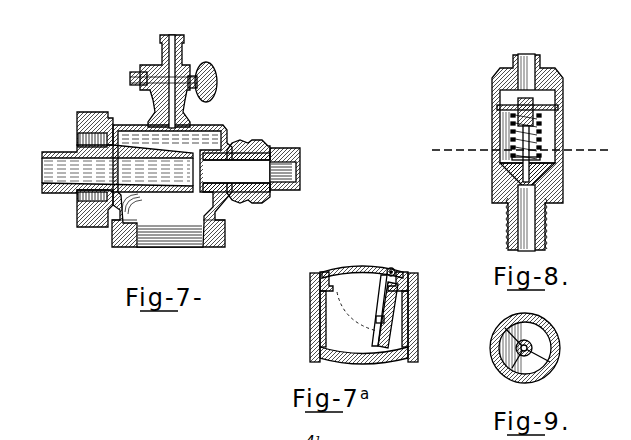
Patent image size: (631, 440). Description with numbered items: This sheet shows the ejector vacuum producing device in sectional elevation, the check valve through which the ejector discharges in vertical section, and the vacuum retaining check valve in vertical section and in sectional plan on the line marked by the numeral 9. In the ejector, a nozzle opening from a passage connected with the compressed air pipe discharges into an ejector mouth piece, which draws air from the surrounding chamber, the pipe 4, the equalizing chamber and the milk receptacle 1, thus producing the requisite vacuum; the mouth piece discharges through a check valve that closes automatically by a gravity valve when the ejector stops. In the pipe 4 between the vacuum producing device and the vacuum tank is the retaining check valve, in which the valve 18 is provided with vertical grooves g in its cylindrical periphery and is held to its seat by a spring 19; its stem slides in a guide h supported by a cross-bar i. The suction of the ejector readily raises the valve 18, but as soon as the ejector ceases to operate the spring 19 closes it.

In FIG. 7, the milk receptacle 1 is at (241, 152).
In FIG. 7, the pipe 4 is at (188, 245).
In FIG. 8, the cross-bar i is at (496, 106).
In FIG. 8, the guide h is at (516, 120).
In FIG. 9, the guide h is at (556, 362).
In FIG. 8, the spring 19 is at (538, 133).
In FIG. 8, the vertical grooves g is at (502, 157).
In FIG. 9, the vertical grooves g is at (548, 323).
In FIG. 8, the valve 18 is at (557, 173).
In FIG. 9, the valve 18 is at (503, 332).
In FIG. 8, the pulsator 9 is at (520, 151).